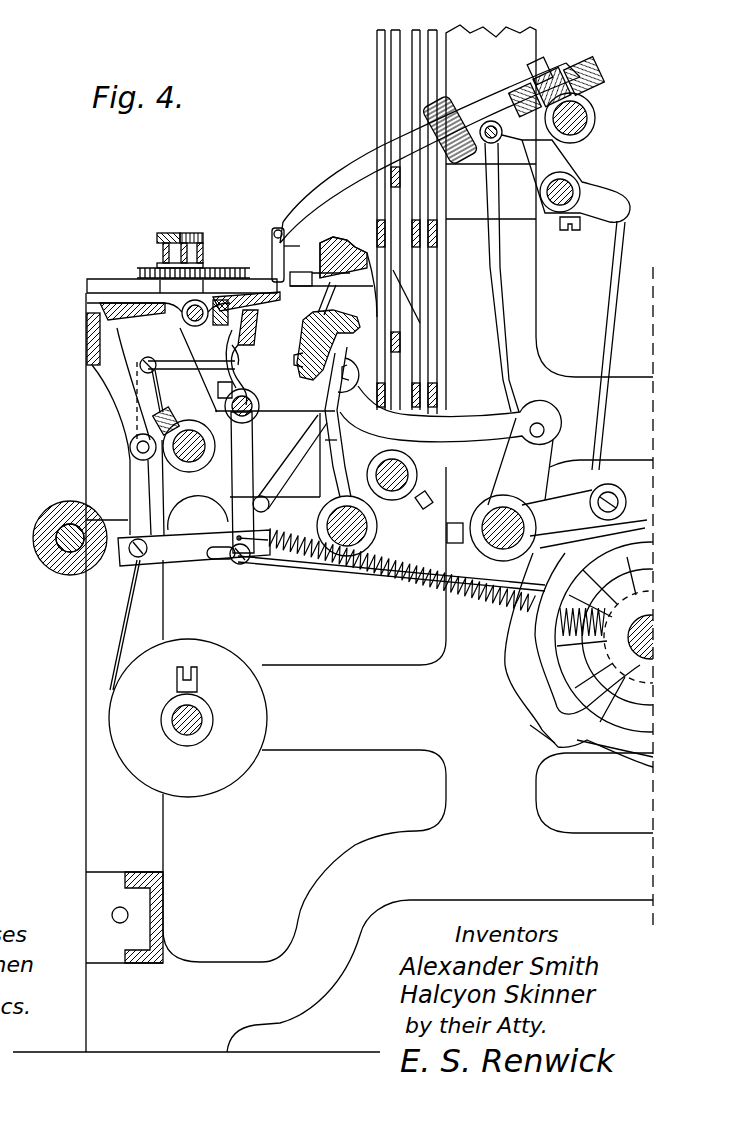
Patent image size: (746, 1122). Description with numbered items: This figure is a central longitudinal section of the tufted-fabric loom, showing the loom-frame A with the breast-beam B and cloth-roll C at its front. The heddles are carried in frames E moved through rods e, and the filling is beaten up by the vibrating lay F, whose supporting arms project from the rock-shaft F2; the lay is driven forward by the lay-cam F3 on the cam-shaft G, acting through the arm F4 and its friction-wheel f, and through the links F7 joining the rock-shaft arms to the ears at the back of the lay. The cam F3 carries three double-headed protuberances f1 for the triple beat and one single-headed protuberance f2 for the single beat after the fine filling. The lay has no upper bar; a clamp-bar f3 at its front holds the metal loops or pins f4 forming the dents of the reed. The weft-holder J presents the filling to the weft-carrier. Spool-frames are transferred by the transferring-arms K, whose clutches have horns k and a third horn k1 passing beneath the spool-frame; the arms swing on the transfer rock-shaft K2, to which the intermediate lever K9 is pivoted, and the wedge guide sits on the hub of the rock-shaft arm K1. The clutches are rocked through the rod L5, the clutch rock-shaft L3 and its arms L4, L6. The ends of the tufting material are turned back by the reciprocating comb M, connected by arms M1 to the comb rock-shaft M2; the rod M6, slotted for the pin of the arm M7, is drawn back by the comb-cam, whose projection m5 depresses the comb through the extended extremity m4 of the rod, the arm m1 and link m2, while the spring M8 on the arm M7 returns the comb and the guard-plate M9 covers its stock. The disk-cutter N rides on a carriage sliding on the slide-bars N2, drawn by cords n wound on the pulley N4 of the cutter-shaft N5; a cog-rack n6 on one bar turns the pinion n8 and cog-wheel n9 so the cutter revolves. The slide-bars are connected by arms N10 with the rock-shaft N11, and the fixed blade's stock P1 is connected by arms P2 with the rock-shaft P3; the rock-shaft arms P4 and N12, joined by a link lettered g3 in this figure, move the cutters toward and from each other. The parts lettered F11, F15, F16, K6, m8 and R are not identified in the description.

The loom-frame A is at (333, 659).
The breast-beam B is at (85, 340).
The cloth-roll C is at (57, 538).
The heddle frames E is at (467, 217).
The rods e is at (406, 215).
The vibrating lay F is at (328, 330).
The friction-wheel f is at (613, 497).
The rock-shaft F2 is at (378, 532).
The lay-cam F3 is at (588, 551).
The arm F4 is at (558, 525).
The links F7 is at (450, 415).
The link F11 is at (324, 458).
The shaft stub F15 is at (459, 518).
The arm F16 is at (520, 461).
The double-headed protuberances f1 is at (544, 731).
The single-headed protuberance f2 is at (587, 546).
The clamp-bar f3 is at (292, 348).
The metal loops or pins f4 is at (320, 298).
The cam-shaft G is at (640, 624).
The link g3 is at (290, 463).
The weft-holder J is at (196, 312).
The transferring-arms K is at (430, 153).
The horns k is at (268, 250).
The rock-shaft arm K1 is at (499, 132).
The third horn k1 is at (328, 285).
The transfer rock-shaft K2 is at (600, 125).
The rod K6 is at (488, 272).
The intermediate lever K9 is at (600, 80).
The clutch rock-shaft L3 is at (584, 178).
The arm L4 is at (579, 214).
The rod L5 is at (598, 320).
The arm L6 is at (526, 153).
The reciprocating comb M is at (259, 327).
The arms M1 is at (247, 367).
The comb rock-shaft M2 is at (258, 405).
The rod M6 is at (287, 569).
The arm M7 is at (242, 482).
The spring M8 is at (425, 597).
The guard-plate M9 is at (246, 293).
The arm m1 is at (214, 322).
The link m2 is at (187, 360).
The extended extremity m4 is at (238, 352).
The supplementary grade or projection m5 is at (175, 487).
The piece m8 is at (218, 390).
The disk-cutter N is at (182, 282).
The cord n is at (162, 341).
The slide-bars N2 is at (213, 242).
The pulley N4 is at (188, 718).
The cutter-shaft N5 is at (213, 719).
The cog-rack n6 is at (165, 241).
The pinion n8 is at (191, 241).
The cog-wheel n9 is at (181, 286).
The arms N10 is at (165, 287).
The rock-shaft N11 is at (189, 446).
The rock-shaft arm N12 is at (188, 450).
The stock P1 is at (348, 267).
The arms P2 is at (369, 375).
The rock-shaft P3 is at (423, 478).
The rock-shaft arm P4 is at (340, 447).
The piece R is at (301, 272).